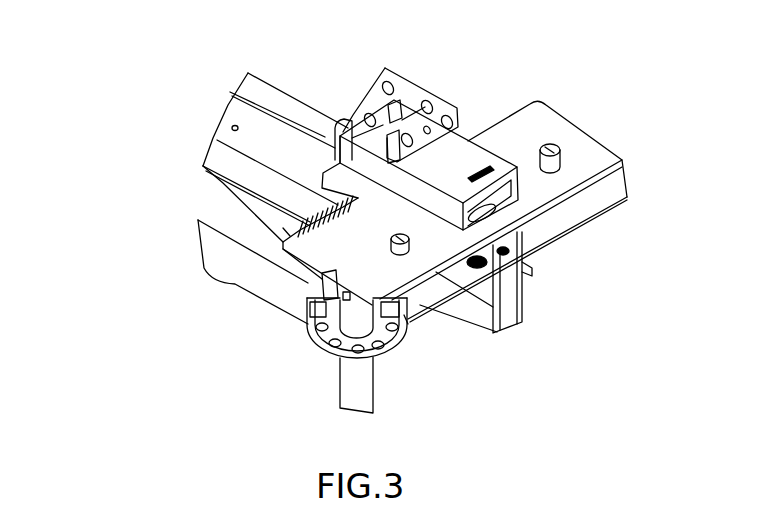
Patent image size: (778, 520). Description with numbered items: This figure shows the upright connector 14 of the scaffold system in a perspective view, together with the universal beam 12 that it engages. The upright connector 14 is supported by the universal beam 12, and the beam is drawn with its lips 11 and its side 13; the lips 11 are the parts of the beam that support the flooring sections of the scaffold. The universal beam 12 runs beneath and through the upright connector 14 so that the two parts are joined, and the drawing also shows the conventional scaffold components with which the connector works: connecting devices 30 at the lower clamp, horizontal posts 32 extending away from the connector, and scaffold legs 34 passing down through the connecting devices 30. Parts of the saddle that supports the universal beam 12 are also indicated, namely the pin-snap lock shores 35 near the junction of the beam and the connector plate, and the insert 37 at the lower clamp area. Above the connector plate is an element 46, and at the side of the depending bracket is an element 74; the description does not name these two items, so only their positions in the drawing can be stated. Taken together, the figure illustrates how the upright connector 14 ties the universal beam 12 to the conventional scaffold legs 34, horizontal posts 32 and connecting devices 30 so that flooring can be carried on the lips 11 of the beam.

The lips 11 is at (213, 155).
The universal beam 12 is at (220, 112).
The side 13 is at (508, 283).
The upright connector 14 is at (557, 95).
The connecting devices 30 is at (318, 351).
The horizontal posts 32 is at (233, 283).
The scaffold legs 34 is at (364, 386).
The pin-snap lock shores 35 is at (288, 229).
The insert 37 is at (404, 315).
The hinge bracket 46 is at (360, 92).
The clip 74 is at (492, 311).